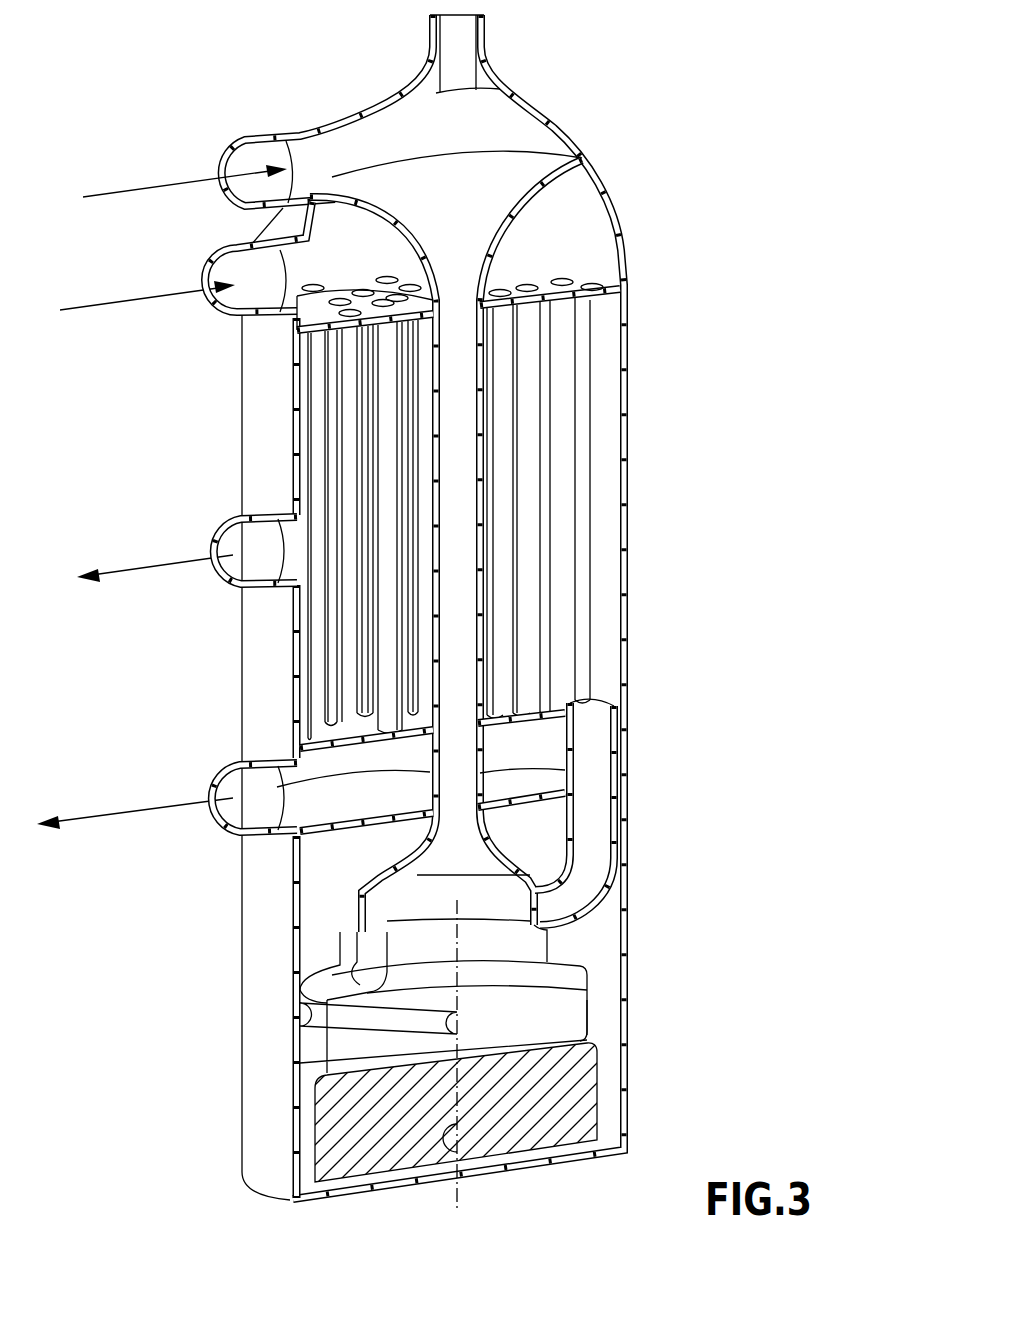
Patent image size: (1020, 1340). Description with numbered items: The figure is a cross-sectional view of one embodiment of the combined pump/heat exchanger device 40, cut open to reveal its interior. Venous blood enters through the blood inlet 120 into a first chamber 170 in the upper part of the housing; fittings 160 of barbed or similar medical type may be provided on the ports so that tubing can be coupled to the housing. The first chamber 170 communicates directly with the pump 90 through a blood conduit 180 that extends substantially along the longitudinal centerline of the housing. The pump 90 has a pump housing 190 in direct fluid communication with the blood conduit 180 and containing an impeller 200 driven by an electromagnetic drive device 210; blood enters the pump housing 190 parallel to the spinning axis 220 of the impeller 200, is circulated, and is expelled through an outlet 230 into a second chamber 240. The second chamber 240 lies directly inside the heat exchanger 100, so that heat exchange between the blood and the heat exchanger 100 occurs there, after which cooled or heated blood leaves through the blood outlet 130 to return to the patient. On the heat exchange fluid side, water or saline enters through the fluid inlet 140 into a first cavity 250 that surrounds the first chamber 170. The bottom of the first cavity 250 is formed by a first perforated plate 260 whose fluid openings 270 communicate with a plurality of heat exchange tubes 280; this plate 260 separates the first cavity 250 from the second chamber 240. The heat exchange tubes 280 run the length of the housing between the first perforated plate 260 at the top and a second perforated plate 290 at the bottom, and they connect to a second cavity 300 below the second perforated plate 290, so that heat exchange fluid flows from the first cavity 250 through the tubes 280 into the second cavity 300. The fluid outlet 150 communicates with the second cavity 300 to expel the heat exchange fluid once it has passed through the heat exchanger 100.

The combined pump/heat exchanger device 40 is at (775, 112).
The pump 90 is at (528, 985).
The heat exchanger 100 is at (628, 562).
The blood inlet 120 is at (216, 183).
The blood outlet 130 is at (122, 570).
The fluid inlet 140 is at (136, 300).
The fluid outlet 150 is at (82, 822).
The fittings 160 is at (307, 130).
The first chamber 170 is at (573, 135).
The blood conduit 180 is at (460, 353).
The pump housing 190 is at (588, 1010).
The impeller 200 is at (343, 1018).
The electromagnetic drive device 210 is at (587, 1120).
The spinning axis 220 is at (333, 992).
The outlet 230 is at (572, 897).
The second chamber 240 is at (600, 648).
The first cavity 250 is at (573, 200).
The first perforated plate 260 is at (593, 283).
The fluid openings 270 is at (567, 277).
The heat exchange tubes 280 is at (528, 480).
The second perforated plate 290 is at (320, 735).
The second cavity 300 is at (545, 748).